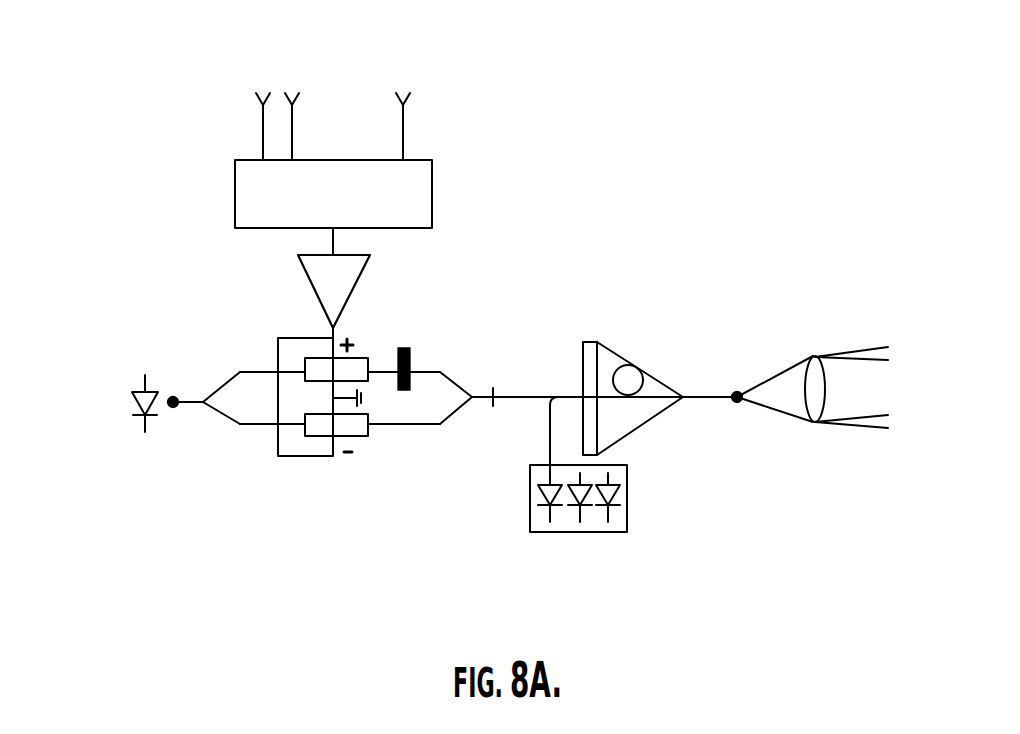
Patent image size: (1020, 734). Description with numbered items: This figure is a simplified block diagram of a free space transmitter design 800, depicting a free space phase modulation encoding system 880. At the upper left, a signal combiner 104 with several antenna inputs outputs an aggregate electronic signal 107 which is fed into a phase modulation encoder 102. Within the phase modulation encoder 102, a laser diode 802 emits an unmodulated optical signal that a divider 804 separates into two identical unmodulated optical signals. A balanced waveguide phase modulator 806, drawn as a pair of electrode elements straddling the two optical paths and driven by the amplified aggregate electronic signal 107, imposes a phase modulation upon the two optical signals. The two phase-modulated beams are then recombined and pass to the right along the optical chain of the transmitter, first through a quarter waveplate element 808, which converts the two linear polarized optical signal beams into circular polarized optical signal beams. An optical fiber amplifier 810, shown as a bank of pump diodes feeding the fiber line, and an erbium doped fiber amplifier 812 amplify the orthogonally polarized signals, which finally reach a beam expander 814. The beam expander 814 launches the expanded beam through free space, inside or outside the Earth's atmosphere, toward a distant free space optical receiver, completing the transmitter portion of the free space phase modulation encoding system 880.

The laser communication transmitter system 800 is at (196, 114).
The signal combiner 104 is at (340, 160).
The aggregate electronic signal 107 is at (333, 242).
The phase modulation encoder 102 is at (369, 424).
The waveguide phase modulator 806 is at (368, 381).
The divider 804 is at (218, 415).
The laser diode 802 is at (120, 355).
The quarter waveplate element 808 is at (497, 437).
The optical fiber amplifier 810 is at (605, 542).
The erbium doped fiber amplifier 812 is at (618, 318).
The beam expander 814 is at (808, 347).
The free space phase modulation encoding system 880 is at (565, 205).